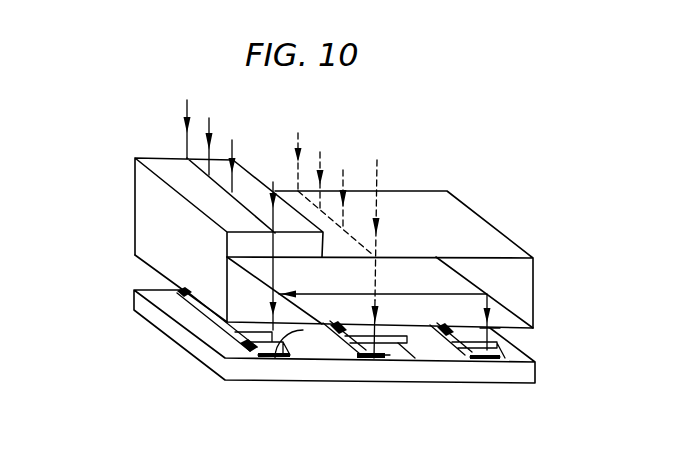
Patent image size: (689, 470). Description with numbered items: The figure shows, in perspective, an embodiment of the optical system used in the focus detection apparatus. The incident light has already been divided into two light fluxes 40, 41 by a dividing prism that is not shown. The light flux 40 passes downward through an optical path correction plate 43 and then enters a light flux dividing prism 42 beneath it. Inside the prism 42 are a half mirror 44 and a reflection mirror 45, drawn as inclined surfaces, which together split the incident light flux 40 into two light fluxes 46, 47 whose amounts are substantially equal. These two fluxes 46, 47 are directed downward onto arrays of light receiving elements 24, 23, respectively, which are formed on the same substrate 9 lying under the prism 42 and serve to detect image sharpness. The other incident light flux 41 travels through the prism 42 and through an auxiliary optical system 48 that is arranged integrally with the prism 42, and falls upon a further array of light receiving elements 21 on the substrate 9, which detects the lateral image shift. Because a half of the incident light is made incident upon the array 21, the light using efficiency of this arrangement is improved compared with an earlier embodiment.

The substrate 9 is at (538, 381).
The array of light receiving elements 21 is at (374, 358).
The array of light receiving elements 23 is at (493, 360).
The array of light receiving elements 24 is at (271, 360).
The light flux 40 is at (273, 182).
The light flux 41 is at (380, 170).
The light flux dividing prism 42 is at (535, 265).
The optical path correction plate 43 is at (140, 173).
The half mirror 44 is at (258, 278).
The reflection mirror 45 is at (513, 308).
The light flux 46 is at (304, 360).
The light flux 47 is at (492, 331).
The auxiliary optical system 48 is at (414, 360).